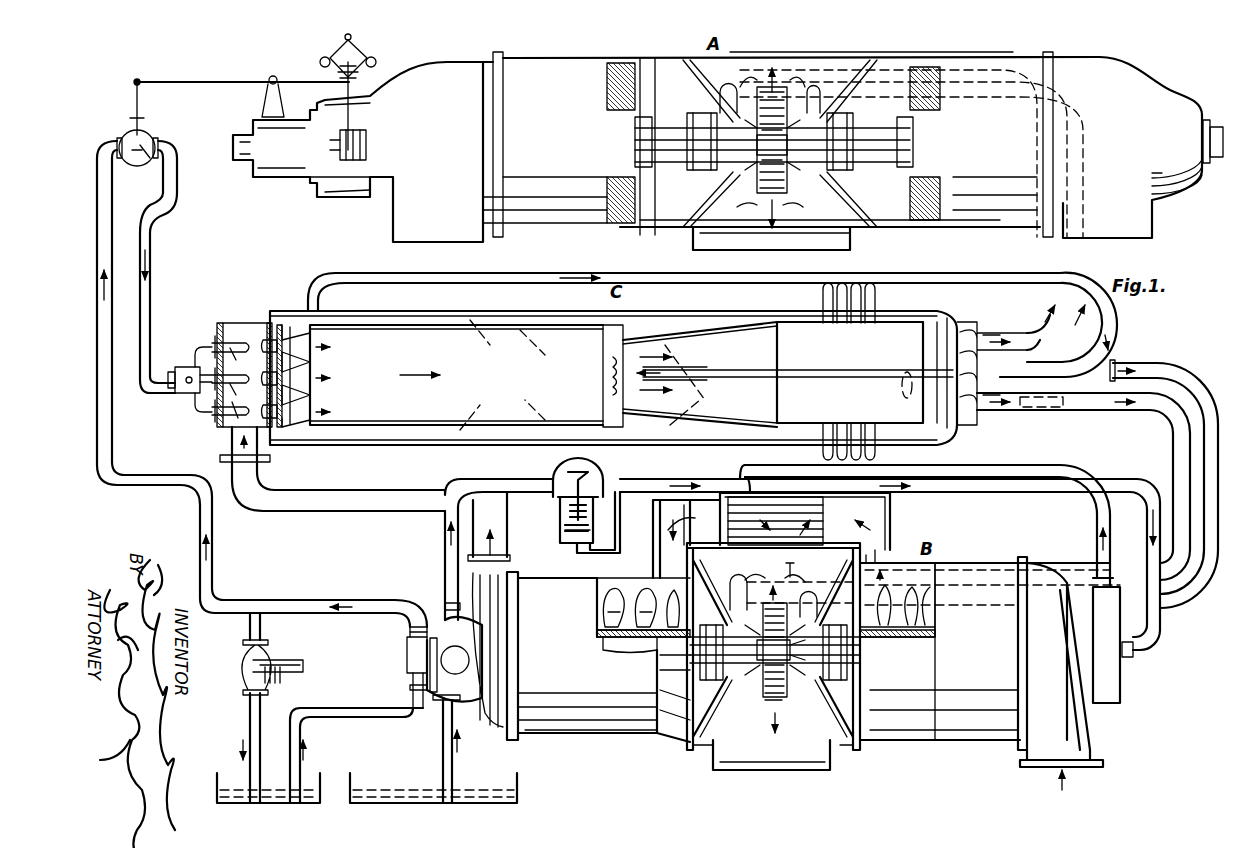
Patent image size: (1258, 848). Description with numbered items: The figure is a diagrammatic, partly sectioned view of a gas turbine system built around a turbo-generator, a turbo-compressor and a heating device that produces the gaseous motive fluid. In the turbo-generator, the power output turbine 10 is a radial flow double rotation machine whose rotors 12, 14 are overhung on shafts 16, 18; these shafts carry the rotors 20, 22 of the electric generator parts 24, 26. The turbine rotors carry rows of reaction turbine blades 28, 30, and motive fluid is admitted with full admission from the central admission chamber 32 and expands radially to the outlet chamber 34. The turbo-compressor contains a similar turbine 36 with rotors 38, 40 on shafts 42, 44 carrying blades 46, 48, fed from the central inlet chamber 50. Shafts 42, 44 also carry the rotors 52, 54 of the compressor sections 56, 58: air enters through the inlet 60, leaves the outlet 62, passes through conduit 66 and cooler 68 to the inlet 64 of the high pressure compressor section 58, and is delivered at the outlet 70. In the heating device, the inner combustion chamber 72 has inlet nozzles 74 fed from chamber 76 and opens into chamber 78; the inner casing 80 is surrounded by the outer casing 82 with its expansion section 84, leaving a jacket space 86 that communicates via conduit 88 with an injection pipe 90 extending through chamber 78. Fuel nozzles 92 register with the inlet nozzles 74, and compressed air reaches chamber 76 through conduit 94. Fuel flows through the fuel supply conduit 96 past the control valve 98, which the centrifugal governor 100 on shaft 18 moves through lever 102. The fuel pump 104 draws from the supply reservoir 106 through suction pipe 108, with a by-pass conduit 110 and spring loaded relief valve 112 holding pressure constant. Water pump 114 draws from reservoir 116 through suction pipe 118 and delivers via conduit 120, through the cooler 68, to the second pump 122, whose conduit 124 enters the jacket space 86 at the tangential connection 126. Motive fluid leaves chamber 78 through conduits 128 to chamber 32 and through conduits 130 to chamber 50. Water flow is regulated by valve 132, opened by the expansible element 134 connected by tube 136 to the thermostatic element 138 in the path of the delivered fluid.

The turbine 10 is at (755, 162).
The rotor 12 is at (790, 170).
The rotor 14 is at (750, 188).
The shaft 16 is at (845, 140).
The shaft 18 is at (362, 156).
The rotor 20 is at (915, 170).
The rotor 22 is at (628, 167).
The electric generator part 24 is at (925, 70).
The electric generator part 26 is at (640, 64).
The turbine blades 28 is at (778, 200).
The turbine blades 30 is at (762, 193).
The central admission chamber 32 is at (789, 145).
The outlet chamber 34 is at (820, 238).
The turbine 36 is at (757, 672).
The rotor 38 is at (800, 697).
The rotor 40 is at (768, 692).
The shaft 42 is at (847, 655).
The shaft 44 is at (700, 655).
The blades 46 is at (792, 700).
The blades 48 is at (770, 700).
The central inlet chamber 50 is at (808, 680).
The rotor 52 is at (925, 640).
The rotor 54 is at (625, 645).
The compressor section 56 is at (952, 563).
The high pressure compressor section 58 is at (565, 590).
The inlet 60 is at (1045, 770).
The outlet 62 is at (883, 550).
The inlet 64 is at (655, 572).
The conduit 66 is at (885, 503).
The cooler 68 is at (776, 505).
The outlet 70 is at (505, 563).
The inner combustion chamber 72 is at (540, 335).
The inlet nozzles 74 is at (318, 352).
The chamber 76 is at (246, 323).
The chamber 78 is at (792, 335).
The inner casing 80 is at (720, 333).
The outer casing 82 is at (660, 310).
The expansion section 84 is at (868, 296).
The jacket space 86 is at (505, 320).
The conduit 88 is at (975, 278).
The injection pipe 90 is at (806, 378).
The fuel nozzles 92 is at (215, 340).
The conduit 94 is at (360, 503).
The fuel supply conduit 96 is at (148, 297).
The control valve 98 is at (150, 140).
The centrifugal governor 100 is at (362, 46).
The lever 102 is at (228, 80).
The pump 104 is at (407, 660).
The supply reservoir 106 is at (318, 778).
The suction pipe 108 is at (372, 718).
The by-pass conduit 110 is at (258, 707).
The spring loaded relief valve 112 is at (272, 660).
The pump 114 is at (448, 640).
The reservoir 116 is at (495, 778).
The suction pipe 118 is at (457, 752).
The conduit 120 is at (1043, 480).
The second pump 122 is at (1120, 680).
The conduit 124 is at (1070, 465).
The tangential connection 126 is at (902, 392).
The conduits 128 is at (1072, 300).
The conduits 130 is at (1167, 385).
The valve 132 is at (566, 466).
The expansible element 134 is at (590, 512).
The tube 136 is at (770, 460).
The thermostatic element 138 is at (1042, 407).